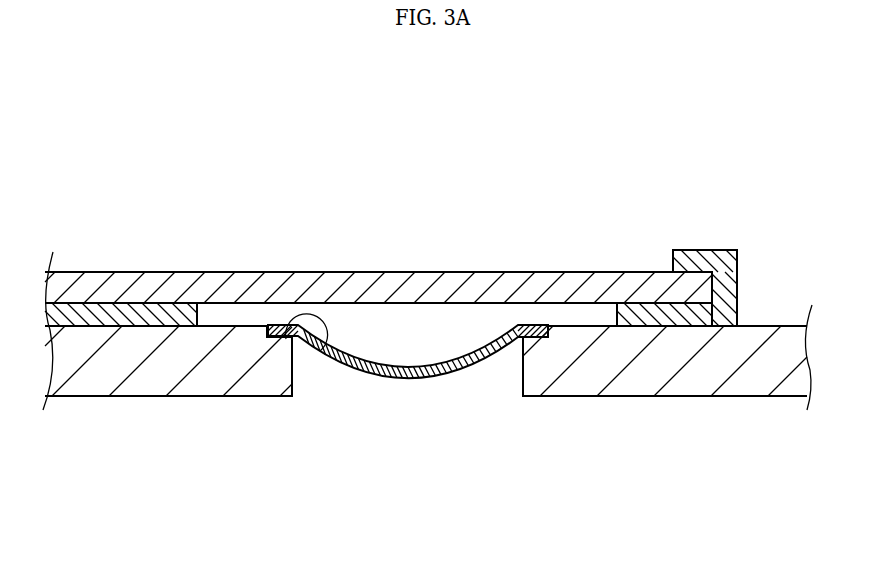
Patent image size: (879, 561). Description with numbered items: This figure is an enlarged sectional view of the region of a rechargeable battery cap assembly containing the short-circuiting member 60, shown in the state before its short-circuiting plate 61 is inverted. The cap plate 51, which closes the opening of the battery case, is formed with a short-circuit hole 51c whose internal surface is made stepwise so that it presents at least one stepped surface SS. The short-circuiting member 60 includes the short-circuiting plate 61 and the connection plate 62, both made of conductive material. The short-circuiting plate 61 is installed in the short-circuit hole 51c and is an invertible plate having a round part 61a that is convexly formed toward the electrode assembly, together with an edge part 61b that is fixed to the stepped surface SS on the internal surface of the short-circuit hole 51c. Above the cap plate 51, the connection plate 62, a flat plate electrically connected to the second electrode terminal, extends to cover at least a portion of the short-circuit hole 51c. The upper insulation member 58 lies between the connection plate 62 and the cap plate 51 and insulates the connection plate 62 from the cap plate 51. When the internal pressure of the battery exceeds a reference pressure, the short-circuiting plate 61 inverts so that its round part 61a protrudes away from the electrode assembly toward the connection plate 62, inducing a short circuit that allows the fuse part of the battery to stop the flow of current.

The short-circuiting member 60 is at (652, 190).
The upper insulation member 58 is at (130, 310).
The connection plate 62 is at (262, 287).
The short-circuit hole 51c is at (413, 332).
The cap plate 51 is at (689, 373).
The short-circuiting plate 61 is at (407, 430).
The round part 61a is at (388, 380).
The edge part 61b is at (322, 357).
The stepped surface SS is at (510, 338).